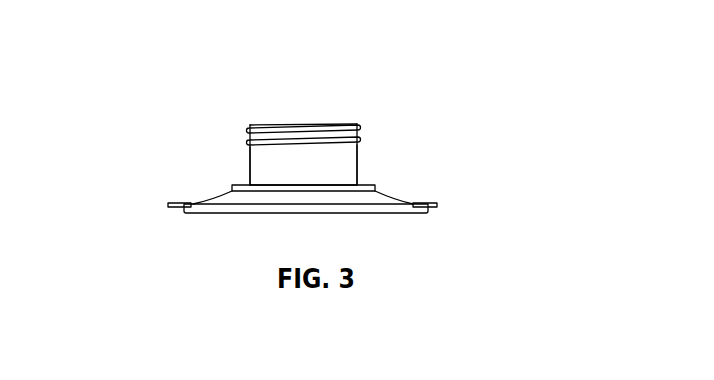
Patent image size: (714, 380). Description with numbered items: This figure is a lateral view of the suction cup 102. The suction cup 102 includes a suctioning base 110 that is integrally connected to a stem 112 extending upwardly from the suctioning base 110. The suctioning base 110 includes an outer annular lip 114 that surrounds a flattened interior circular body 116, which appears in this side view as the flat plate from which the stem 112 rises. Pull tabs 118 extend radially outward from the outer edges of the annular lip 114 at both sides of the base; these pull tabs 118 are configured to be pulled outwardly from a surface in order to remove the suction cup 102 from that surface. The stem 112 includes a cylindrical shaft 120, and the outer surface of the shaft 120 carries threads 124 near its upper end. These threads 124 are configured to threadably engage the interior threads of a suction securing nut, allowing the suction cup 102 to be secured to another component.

The suction cup 102 is at (158, 113).
The suctioning base 110 is at (410, 203).
The stem 112 is at (352, 158).
The outer annular lip 114 is at (210, 200).
The flattened interior circular body 116 is at (373, 185).
The pull tabs 118 is at (437, 205).
The cylindrical shaft 120 is at (257, 168).
The threads 124 is at (357, 128).